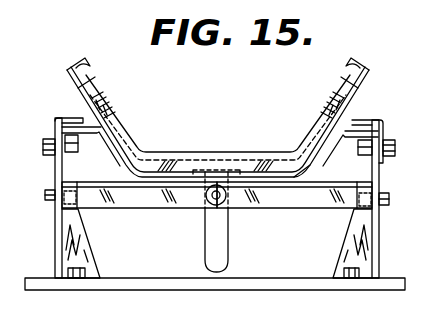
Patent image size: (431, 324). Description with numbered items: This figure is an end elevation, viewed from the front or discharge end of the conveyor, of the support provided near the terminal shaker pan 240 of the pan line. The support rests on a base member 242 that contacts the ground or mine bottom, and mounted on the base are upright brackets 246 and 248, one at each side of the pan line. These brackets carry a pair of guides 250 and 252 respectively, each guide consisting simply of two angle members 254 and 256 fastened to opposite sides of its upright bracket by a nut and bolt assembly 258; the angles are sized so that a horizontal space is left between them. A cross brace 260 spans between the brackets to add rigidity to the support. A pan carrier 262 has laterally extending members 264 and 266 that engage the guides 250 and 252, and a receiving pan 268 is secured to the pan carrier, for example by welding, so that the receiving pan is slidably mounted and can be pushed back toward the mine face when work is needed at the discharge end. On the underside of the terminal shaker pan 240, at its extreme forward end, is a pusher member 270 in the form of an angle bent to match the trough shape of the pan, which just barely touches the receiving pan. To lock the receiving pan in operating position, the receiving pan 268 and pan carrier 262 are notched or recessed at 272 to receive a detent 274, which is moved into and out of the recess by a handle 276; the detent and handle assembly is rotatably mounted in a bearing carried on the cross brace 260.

The terminal shaker pan 240 is at (107, 97).
The base member 242 is at (319, 284).
The upright bracket 246 is at (58, 240).
The upright bracket 248 is at (375, 238).
The guide 250 is at (52, 115).
The guide 252 is at (380, 117).
The angle member 254 is at (43, 152).
The angle member 256 is at (72, 153).
The nut and bolt assembly 258 is at (389, 155).
The cross brace 260 is at (298, 200).
The pan carrier 262 is at (148, 178).
The laterally extending member 264 is at (101, 123).
The laterally extending member 266 is at (336, 124).
The receiving pan 268 is at (311, 160).
The pusher member 270 is at (179, 170).
The notch or recess 272 is at (229, 164).
The detent 274 is at (213, 172).
The handle 276 is at (225, 263).